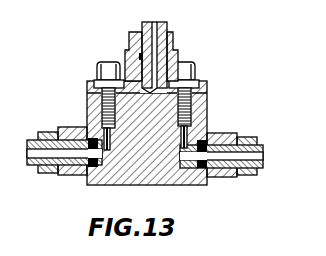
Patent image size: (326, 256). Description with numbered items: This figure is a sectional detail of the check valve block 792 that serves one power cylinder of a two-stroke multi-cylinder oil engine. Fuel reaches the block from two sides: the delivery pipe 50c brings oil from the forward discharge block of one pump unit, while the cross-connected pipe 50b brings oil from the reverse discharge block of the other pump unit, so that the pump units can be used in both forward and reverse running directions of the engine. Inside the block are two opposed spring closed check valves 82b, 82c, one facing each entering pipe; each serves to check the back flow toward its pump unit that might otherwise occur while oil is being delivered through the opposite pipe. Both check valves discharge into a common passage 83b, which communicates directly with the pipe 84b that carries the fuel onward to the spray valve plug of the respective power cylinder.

The check valve block 792 is at (180, 183).
The common passage 83b is at (168, 95).
The pipe 84b is at (154, 28).
The check valve 82b is at (87, 128).
The check valve 82c is at (190, 140).
The cross-connected pipe 50b is at (42, 153).
The delivery pipe 50c is at (257, 166).